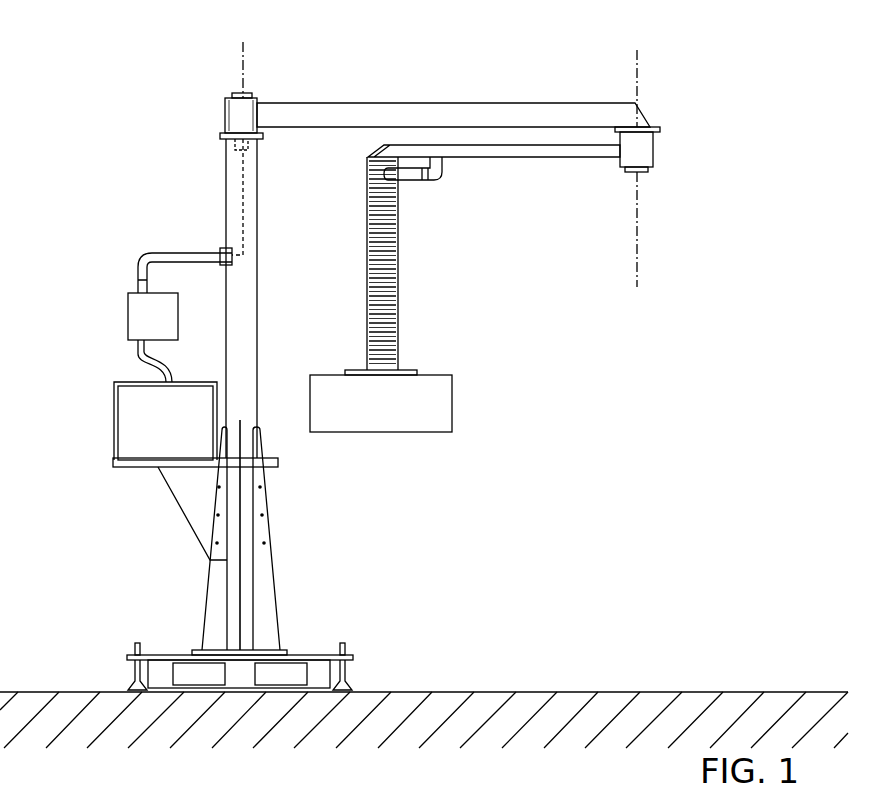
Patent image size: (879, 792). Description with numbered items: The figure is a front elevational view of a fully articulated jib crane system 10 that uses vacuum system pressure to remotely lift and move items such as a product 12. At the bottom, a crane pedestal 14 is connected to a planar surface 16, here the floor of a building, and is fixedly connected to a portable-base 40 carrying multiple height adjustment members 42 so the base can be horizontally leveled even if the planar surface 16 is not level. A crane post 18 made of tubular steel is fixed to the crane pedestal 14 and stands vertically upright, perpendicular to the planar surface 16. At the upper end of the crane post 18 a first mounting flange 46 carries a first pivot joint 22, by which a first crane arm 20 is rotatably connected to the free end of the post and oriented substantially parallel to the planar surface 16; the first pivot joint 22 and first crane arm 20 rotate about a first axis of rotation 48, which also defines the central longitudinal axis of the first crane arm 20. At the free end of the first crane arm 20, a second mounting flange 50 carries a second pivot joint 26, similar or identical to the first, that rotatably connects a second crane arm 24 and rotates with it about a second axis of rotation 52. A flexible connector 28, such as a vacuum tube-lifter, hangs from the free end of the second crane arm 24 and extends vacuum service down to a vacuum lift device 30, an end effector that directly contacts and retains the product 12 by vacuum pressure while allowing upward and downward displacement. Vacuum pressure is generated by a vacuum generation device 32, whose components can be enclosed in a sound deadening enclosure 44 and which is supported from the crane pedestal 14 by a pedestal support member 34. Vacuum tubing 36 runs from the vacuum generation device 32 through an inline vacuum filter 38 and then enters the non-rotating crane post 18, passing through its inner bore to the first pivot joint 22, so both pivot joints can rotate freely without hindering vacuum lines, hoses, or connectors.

The jib crane system 10 is at (729, 190).
The product 12 is at (452, 403).
The crane pedestal 14 is at (273, 567).
The planar surface 16 is at (528, 688).
The crane post 18 is at (247, 300).
The first crane arm 20 is at (448, 103).
The first pivot joint 22 is at (234, 110).
The second crane arm 24 is at (533, 157).
The second pivot joint 26 is at (653, 152).
The flexible connector 28 is at (398, 270).
The vacuum lift device 30 is at (417, 372).
The vacuum generation device 32 is at (122, 403).
The pedestal support member 34 is at (132, 470).
The vacuum tubing 36 is at (138, 270).
The inline vacuum filter 38 is at (133, 320).
The portable-base 40 is at (317, 655).
The height adjustment members 42 is at (347, 672).
The sound deadening enclosure 44 is at (114, 418).
The first mounting flange 46 is at (220, 137).
The first axis of rotation 48 is at (243, 73).
The second mounting flange 50 is at (658, 128).
The second axis of rotation 52 is at (637, 82).